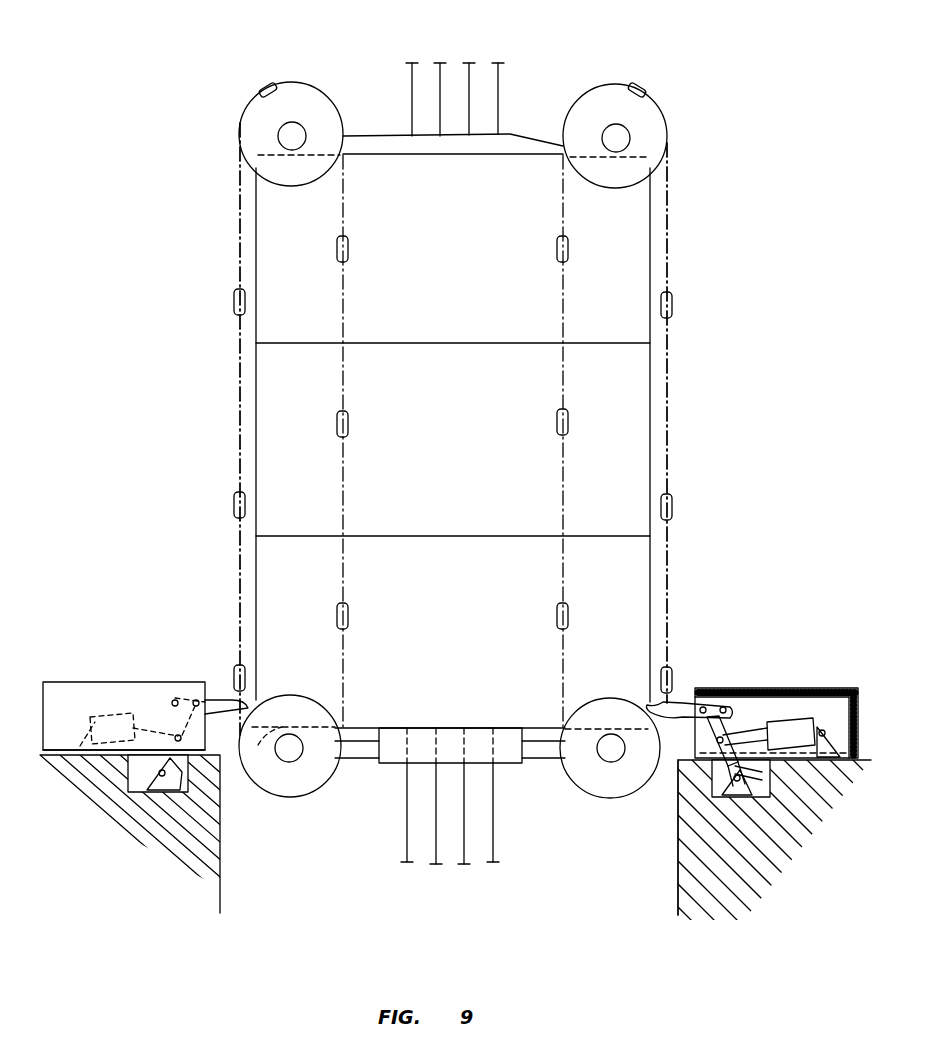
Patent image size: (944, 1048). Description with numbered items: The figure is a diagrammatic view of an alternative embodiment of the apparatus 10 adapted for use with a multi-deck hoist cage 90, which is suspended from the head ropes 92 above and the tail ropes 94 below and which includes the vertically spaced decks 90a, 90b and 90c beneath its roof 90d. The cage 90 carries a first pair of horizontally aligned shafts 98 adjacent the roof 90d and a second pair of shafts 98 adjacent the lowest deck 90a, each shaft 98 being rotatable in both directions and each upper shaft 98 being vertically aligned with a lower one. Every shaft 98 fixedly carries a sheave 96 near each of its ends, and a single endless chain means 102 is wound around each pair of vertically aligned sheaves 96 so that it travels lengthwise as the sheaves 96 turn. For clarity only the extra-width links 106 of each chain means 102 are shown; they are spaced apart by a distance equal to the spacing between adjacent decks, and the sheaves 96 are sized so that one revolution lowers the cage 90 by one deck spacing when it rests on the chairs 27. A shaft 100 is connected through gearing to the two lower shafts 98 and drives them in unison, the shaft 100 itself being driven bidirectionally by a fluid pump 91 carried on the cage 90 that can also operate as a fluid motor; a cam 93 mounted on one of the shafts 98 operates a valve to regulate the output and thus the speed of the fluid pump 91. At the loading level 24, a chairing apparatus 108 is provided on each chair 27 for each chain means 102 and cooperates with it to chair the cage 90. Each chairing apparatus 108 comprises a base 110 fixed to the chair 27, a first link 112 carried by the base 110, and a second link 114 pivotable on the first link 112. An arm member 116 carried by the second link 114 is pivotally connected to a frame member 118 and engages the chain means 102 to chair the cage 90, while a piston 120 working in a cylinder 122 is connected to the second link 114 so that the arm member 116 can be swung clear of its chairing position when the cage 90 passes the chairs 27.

The section line 10 is at (452, 43).
The loading level 24 is at (678, 751).
The chairs 27 is at (98, 808).
The multi-deck hoist cage 90 is at (656, 421).
The deck 90a is at (452, 728).
The deck 90b is at (454, 536).
The deck 90c is at (457, 343).
The roof 90d is at (512, 135).
The fluid pump 91 is at (514, 760).
The head ropes 92 is at (438, 82).
The cam 93 is at (263, 752).
The tail ropes 94 is at (430, 868).
The sheave 96 is at (242, 124).
The shafts 98 is at (298, 132).
The shaft 100 is at (364, 760).
The chain means 102 is at (240, 248).
The links of extra width 106 is at (234, 306).
The chairing apparatus 108 is at (211, 672).
The base 110 is at (736, 798).
The first link 112 is at (756, 772).
The second link 114 is at (731, 716).
The arm member 116 is at (700, 701).
The frame member 118 is at (120, 685).
The piston 120 is at (757, 730).
The cylinder 122 is at (797, 725).